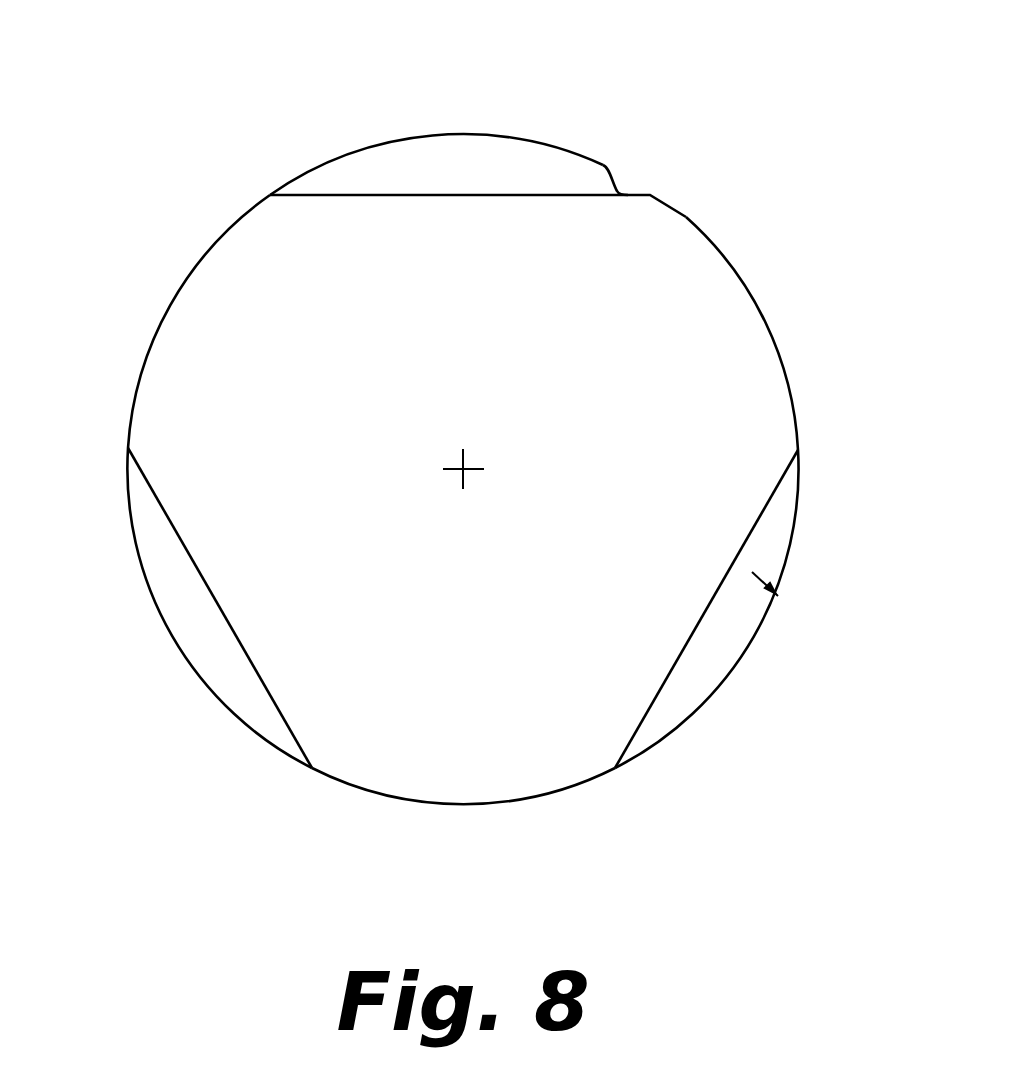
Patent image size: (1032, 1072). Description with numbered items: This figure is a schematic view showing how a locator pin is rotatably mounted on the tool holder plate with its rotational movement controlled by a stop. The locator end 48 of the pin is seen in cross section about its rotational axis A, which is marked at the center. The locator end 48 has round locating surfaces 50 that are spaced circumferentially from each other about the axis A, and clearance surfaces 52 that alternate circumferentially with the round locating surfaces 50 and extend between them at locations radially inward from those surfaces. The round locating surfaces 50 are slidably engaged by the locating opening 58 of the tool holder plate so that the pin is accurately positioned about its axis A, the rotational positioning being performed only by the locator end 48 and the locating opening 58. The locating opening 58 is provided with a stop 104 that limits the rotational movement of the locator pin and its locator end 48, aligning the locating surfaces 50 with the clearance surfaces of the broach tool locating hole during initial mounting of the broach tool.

The locator end 48 is at (468, 470).
The round locating surfaces 50 is at (722, 252).
The clearance surfaces 52 is at (442, 195).
The locating opening 58 is at (752, 572).
The stop 104 is at (628, 185).
The axis A is at (463, 467).